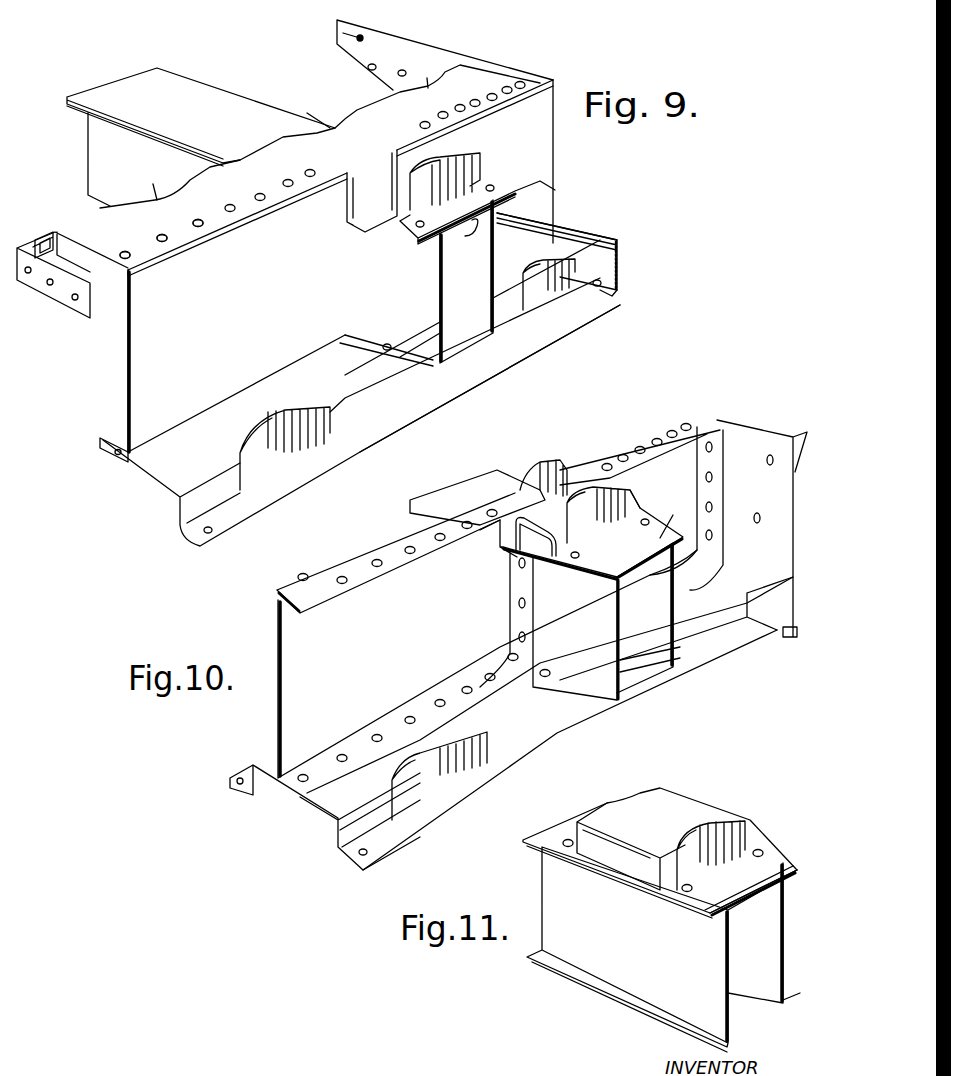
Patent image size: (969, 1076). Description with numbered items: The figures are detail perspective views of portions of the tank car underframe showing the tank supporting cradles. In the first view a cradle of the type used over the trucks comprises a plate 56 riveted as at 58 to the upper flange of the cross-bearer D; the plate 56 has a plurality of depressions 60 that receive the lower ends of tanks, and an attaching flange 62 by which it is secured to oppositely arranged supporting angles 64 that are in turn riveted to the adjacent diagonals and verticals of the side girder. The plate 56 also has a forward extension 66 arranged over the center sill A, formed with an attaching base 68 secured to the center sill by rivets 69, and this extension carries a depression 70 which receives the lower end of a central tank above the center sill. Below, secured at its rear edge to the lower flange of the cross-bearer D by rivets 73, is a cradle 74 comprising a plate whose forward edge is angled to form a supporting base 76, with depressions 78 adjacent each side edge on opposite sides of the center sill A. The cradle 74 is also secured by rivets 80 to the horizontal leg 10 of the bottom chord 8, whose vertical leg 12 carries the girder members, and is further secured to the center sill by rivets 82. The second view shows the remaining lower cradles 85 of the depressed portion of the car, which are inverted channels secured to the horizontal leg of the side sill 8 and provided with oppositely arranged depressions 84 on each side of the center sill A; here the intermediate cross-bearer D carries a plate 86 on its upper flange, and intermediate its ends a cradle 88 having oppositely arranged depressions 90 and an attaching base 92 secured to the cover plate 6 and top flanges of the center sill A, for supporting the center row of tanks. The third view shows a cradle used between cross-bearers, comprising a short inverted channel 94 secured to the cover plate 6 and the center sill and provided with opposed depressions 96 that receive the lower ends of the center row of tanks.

In FIG. 9, the cover plate 6 is at (120, 87).
In FIG. 10, the cover plate 6 is at (412, 500).
In FIG. 11, the cover plate 6 is at (773, 870).
In FIG. 9, the bottom chord 8 is at (605, 252).
In FIG. 10, the bottom chord 8 is at (792, 638).
In FIG. 9, the horizontal leg 10 is at (608, 293).
In FIG. 9, the vertical leg 12 is at (617, 240).
In FIG. 9, the plate 56 is at (326, 170).
In FIG. 9, the rivets 58 is at (194, 223).
In FIG. 9, the depressions 60 is at (289, 128).
In FIG. 9, the attaching flange 62 is at (43, 236).
In FIG. 9, the supporting angles 64 is at (63, 298).
In FIG. 9, the forward extension 66 is at (376, 191).
In FIG. 9, the attaching base 68 is at (458, 206).
In FIG. 9, the rivets 69 is at (497, 189).
In FIG. 9, the depression 70 is at (430, 178).
In FIG. 9, the rivets 73 is at (115, 440).
In FIG. 9, the cradle 74 is at (172, 483).
In FIG. 9, the supporting base 76 is at (378, 415).
In FIG. 9, the depressions 78 is at (258, 440).
In FIG. 9, the rivets 80 is at (596, 289).
In FIG. 9, the rivets 82 is at (378, 352).
In FIG. 10, the depressions 84 is at (418, 770).
In FIG. 10, the lower cradles 85 is at (330, 808).
In FIG. 10, the plates 86 is at (355, 565).
In FIG. 10, the cradle 88 is at (565, 470).
In FIG. 10, the depressions 90 is at (530, 472).
In FIG. 10, the attaching base 92 is at (448, 520).
In FIG. 11, the short inverted channel 94 is at (680, 806).
In FIG. 11, the opposed depressions 96 is at (645, 800).
In FIG. 9, the center sill A is at (490, 271).
In FIG. 10, the center sill A is at (673, 604).
In FIG. 11, the center sill A is at (778, 950).
In FIG. 9, the cross-bearer D is at (340, 266).
In FIG. 10, the cross-bearer D is at (487, 664).